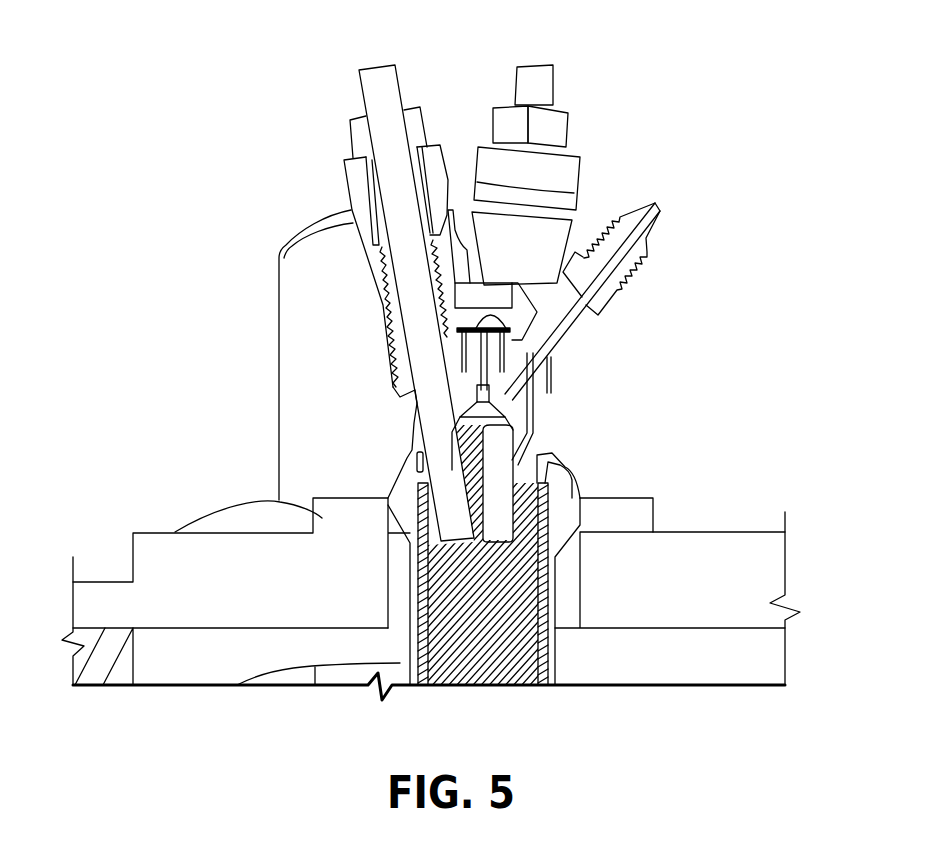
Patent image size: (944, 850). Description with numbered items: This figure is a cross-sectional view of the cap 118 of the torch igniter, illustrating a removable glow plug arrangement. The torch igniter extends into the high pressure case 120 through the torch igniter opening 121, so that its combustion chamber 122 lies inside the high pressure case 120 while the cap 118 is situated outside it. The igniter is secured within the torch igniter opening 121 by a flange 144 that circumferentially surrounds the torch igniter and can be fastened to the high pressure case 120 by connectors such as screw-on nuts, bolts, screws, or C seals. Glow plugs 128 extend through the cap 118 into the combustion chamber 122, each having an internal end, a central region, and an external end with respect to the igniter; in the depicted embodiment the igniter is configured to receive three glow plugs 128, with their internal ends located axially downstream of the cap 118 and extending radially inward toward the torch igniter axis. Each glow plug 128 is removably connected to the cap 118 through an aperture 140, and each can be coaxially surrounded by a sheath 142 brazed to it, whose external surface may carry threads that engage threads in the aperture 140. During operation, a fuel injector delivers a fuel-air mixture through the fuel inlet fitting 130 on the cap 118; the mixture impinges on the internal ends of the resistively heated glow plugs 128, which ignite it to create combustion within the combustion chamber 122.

The cap 118 is at (418, 412).
The high pressure case 120 is at (767, 572).
The torch igniter opening 121 is at (580, 556).
The combustion chamber 122 is at (458, 636).
The glow plug 128 is at (371, 68).
The fuel inlet fitting 130 is at (660, 238).
The aperture 140 is at (538, 447).
The sheath 142 is at (351, 140).
The flange 144 is at (322, 518).